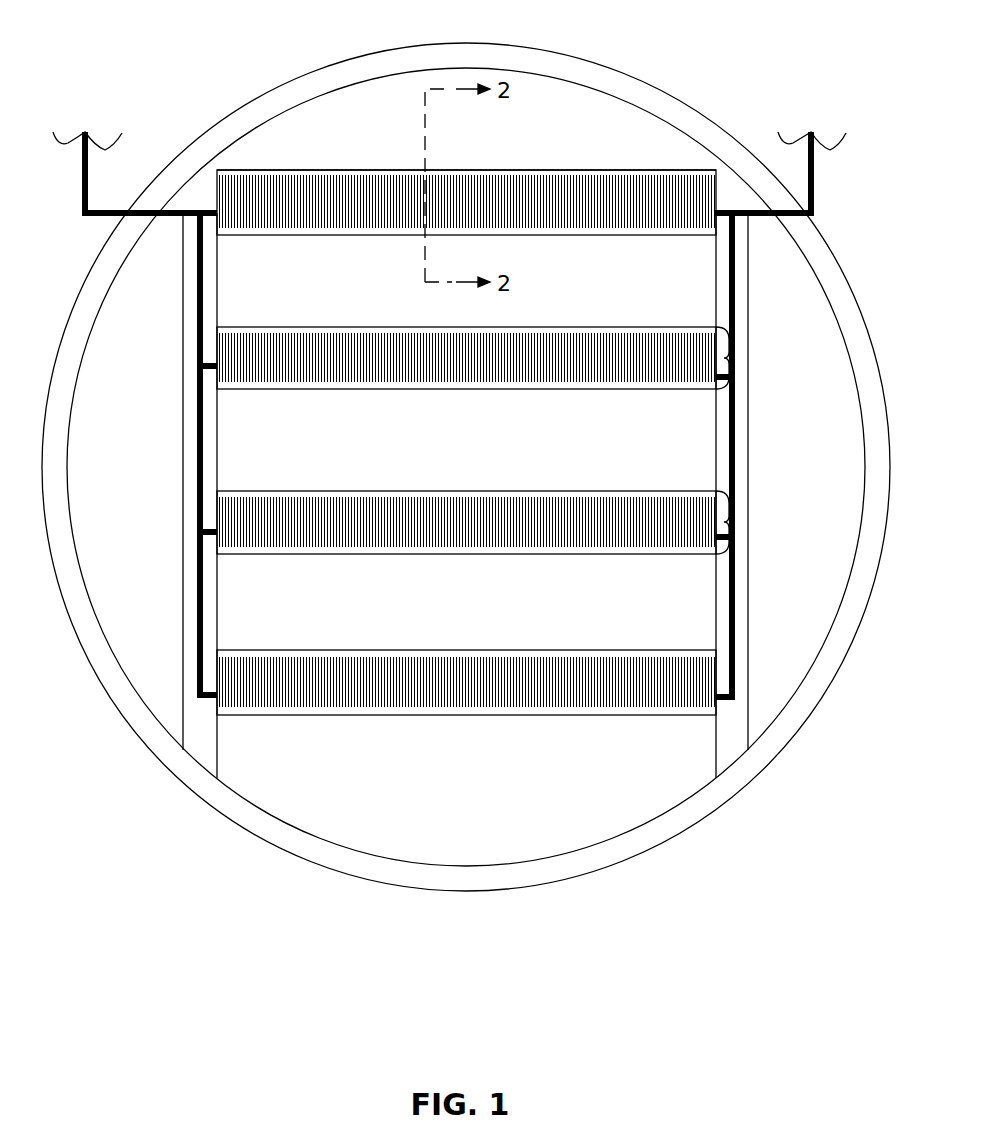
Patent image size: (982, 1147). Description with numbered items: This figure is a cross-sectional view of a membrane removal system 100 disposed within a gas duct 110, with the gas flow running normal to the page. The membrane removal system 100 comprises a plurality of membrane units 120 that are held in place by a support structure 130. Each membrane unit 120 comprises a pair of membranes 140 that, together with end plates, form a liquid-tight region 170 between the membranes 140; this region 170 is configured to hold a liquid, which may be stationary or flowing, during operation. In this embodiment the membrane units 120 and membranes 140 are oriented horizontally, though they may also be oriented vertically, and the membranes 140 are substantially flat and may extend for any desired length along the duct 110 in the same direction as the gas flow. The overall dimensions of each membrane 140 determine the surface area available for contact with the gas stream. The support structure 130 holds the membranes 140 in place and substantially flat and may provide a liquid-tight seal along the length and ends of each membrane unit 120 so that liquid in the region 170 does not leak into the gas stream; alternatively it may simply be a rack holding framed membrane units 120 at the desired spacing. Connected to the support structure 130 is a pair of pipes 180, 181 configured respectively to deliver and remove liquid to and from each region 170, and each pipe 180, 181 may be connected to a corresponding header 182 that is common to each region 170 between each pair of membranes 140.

The membrane removal system 100 is at (565, 170).
The gas duct 110 is at (398, 878).
The membrane unit 120 is at (733, 375).
The support structure 130 is at (200, 753).
The membrane 140 is at (242, 203).
The liquid-tight region 170 is at (245, 200).
The pipe 180 is at (83, 218).
The pipe 181 is at (813, 206).
The header 182 is at (200, 367).